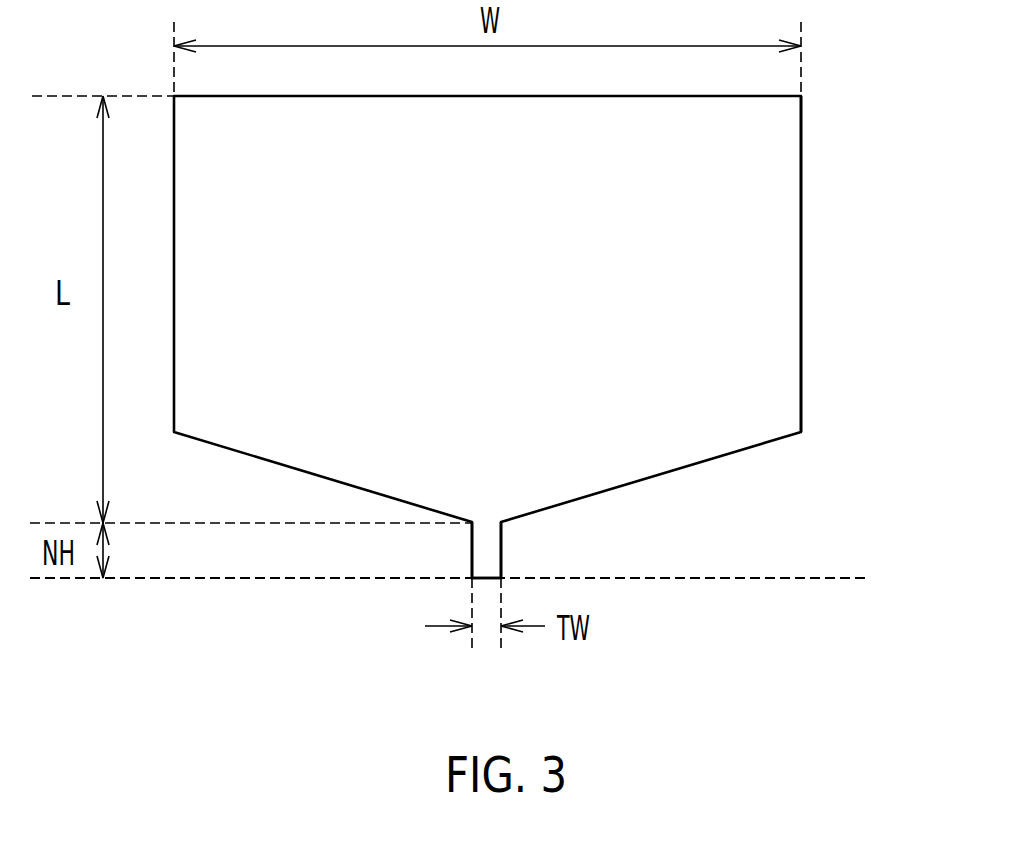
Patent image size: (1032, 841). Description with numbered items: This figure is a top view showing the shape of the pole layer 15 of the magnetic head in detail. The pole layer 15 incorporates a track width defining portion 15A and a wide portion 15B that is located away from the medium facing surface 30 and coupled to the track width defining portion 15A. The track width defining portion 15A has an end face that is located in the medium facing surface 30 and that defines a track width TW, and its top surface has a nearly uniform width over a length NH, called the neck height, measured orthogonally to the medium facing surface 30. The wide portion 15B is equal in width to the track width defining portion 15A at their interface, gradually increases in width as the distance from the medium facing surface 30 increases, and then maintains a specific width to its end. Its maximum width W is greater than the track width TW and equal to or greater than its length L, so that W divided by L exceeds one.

The pole layer 15 is at (801, 158).
The track width defining portion 15A is at (501, 543).
The wide portion 15B is at (801, 238).
The medium facing surface 30 is at (334, 578).